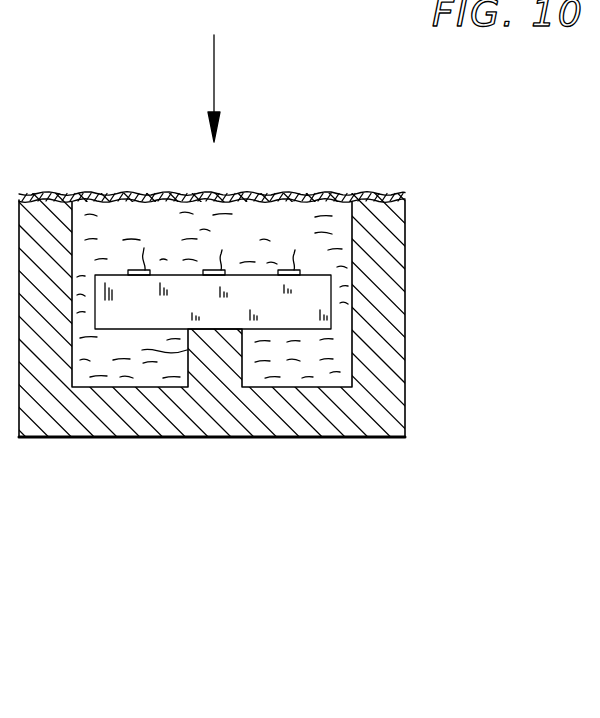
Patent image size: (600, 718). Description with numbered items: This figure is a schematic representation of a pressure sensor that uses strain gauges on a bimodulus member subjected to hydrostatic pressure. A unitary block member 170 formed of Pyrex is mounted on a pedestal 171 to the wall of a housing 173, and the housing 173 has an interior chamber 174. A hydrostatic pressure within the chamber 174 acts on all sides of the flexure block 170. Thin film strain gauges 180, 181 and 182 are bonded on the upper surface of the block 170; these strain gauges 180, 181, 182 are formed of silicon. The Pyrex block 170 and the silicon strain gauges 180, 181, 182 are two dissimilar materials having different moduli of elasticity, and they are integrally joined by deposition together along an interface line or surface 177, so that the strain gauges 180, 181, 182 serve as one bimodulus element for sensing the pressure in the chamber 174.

The unitary block member 170 is at (300, 302).
The pedestal 171 is at (212, 295).
The housing 173 is at (405, 388).
The interior chamber 174 is at (157, 388).
The interface line or surface 177 is at (205, 278).
The thin film strain gauge 180 is at (128, 272).
The thin film strain gauge 181 is at (203, 272).
The thin film strain gauge 182 is at (277, 272).